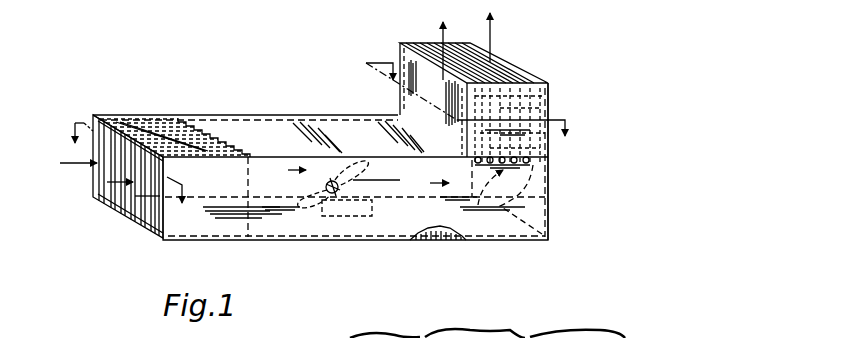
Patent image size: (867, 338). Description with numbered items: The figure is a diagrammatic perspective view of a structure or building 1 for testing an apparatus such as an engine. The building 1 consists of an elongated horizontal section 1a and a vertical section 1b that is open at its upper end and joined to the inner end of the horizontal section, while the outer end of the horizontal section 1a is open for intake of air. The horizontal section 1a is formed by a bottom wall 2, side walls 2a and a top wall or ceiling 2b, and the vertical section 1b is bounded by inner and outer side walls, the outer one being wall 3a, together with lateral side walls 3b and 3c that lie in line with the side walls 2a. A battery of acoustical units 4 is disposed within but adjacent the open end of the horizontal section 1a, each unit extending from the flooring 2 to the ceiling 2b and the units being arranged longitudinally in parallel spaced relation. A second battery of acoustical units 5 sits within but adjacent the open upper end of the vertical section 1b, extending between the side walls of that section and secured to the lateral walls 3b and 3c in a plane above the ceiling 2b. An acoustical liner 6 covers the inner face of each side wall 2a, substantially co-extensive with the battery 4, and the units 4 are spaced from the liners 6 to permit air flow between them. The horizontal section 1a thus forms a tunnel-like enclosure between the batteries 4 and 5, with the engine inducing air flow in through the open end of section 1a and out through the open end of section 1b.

The structure or building 1 is at (575, 210).
The horizontal section 1a is at (367, 230).
The vertical section 1b is at (548, 93).
The bottom wall 2 is at (443, 252).
The side walls 2a is at (175, 252).
The top wall 2b is at (268, 119).
The outer side wall 3a is at (512, 66).
The lateral side wall 3b is at (410, 44).
The lateral side wall 3c is at (540, 180).
The battery of acoustical units 4 is at (129, 183).
The battery of acoustical units 5 is at (472, 39).
The acoustical liner 6 is at (435, 139).